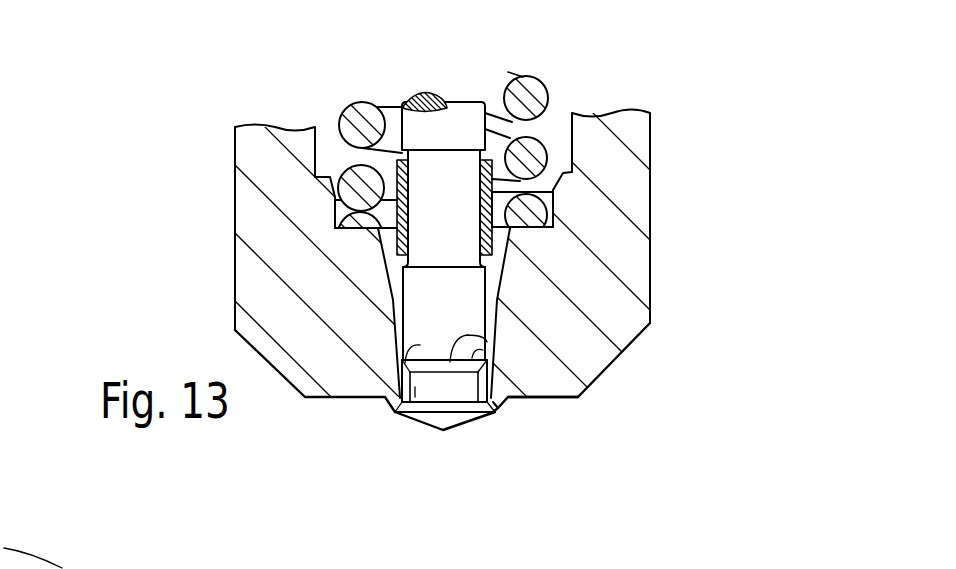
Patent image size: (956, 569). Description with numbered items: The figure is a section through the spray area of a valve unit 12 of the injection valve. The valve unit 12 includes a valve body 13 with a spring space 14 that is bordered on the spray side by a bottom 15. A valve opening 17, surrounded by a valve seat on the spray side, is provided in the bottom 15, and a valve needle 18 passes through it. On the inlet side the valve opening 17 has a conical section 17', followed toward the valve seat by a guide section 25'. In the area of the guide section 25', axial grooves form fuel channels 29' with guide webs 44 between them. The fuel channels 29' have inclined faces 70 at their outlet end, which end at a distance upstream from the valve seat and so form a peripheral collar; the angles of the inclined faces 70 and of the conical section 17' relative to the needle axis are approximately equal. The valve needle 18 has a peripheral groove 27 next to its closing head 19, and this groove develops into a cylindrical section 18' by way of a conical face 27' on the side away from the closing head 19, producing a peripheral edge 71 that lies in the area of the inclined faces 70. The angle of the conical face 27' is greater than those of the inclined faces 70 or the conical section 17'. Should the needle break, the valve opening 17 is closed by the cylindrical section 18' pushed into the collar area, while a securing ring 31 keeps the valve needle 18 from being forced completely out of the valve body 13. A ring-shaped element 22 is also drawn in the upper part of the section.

The valve unit 12 is at (212, 203).
The valve body 13 is at (623, 137).
The spring space 14 is at (328, 147).
The bottom 15 is at (550, 310).
The valve opening 17 is at (376, 423).
The conical section 17' is at (509, 210).
The valve needle 18 is at (396, 207).
The cylindrical section 18' is at (582, 273).
The closing head 19 is at (452, 418).
The spring ring 22 is at (549, 91).
The guide section 25' is at (537, 449).
The peripheral groove 27 is at (421, 467).
The conical face 27' is at (298, 296).
The fuel channels 29' is at (605, 360).
The securing ring 31 is at (546, 181).
The guide webs 44 is at (398, 341).
The inclined faces 70 is at (428, 401).
The peripheral edge 71 is at (576, 398).